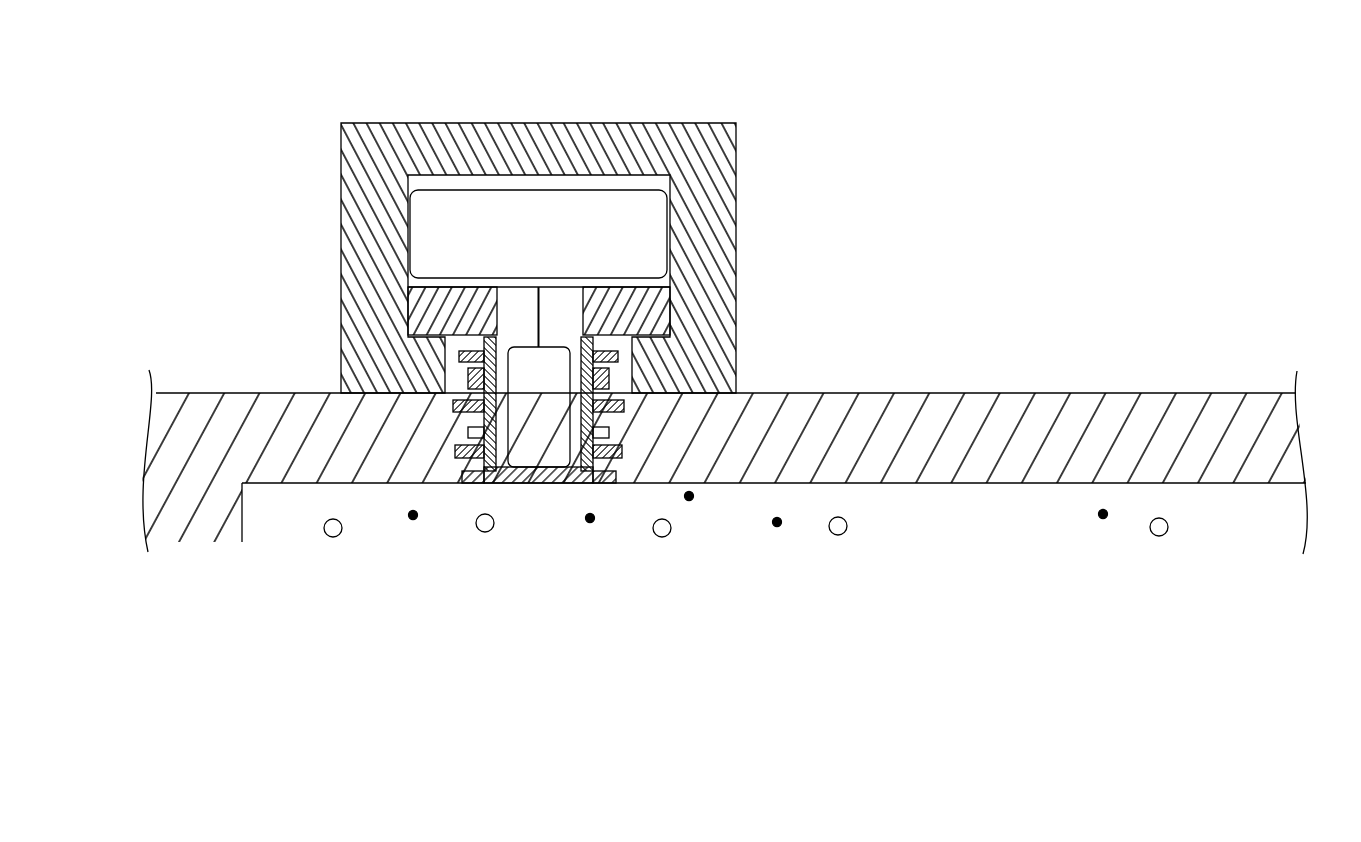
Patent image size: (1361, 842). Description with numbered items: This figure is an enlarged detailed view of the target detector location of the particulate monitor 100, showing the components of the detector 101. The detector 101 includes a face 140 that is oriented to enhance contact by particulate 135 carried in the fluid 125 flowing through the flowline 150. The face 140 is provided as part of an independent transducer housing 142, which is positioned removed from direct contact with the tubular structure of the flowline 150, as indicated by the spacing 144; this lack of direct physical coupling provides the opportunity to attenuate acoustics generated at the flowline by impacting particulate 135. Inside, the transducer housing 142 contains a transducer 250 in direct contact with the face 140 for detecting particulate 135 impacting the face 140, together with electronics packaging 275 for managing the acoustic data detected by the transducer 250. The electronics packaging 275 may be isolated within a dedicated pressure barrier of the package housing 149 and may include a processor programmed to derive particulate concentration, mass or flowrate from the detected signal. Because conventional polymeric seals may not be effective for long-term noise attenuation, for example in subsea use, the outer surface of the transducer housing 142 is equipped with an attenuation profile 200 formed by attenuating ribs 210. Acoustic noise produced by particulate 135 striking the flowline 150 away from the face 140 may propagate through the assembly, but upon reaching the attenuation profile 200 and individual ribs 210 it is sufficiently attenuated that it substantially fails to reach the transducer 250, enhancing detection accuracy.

The particulate monitor 100 is at (1094, 140).
The detector 101 is at (545, 100).
The package housing 149 is at (340, 203).
The electronics packaging 275 is at (625, 208).
The transducer housing 142 is at (401, 302).
The attenuation profile 200 is at (455, 433).
The attenuating ribs 210 is at (461, 397).
The transducer 250 is at (532, 447).
The face 140 is at (538, 492).
The spacing 144 is at (455, 490).
The flowline 150 is at (981, 404).
The fluid 125 is at (315, 526).
The particulate 135 is at (777, 518).